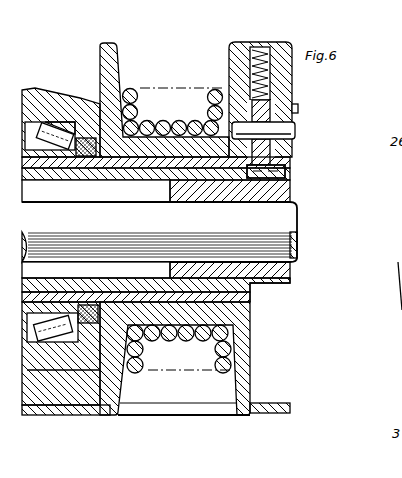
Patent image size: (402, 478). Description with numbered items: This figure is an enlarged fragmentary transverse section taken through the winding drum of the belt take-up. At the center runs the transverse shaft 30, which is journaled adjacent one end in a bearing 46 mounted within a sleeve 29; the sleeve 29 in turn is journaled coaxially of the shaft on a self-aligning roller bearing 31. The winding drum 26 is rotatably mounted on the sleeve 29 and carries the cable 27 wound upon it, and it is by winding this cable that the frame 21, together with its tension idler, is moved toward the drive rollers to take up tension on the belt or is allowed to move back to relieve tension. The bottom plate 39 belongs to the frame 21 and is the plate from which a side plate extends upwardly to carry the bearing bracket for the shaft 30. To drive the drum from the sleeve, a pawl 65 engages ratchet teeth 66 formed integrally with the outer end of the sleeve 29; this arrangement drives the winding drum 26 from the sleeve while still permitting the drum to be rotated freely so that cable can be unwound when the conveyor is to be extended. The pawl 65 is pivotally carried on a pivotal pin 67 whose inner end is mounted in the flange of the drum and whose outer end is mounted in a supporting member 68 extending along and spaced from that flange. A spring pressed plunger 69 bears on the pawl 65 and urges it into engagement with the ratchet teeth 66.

The frame 21 is at (70, 426).
The winding drum 26 is at (118, 26).
The cable 27 is at (130, 94).
The sleeve 29 is at (126, 183).
The transverse shaft 30 is at (283, 218).
The self-aligning roller bearing 31 is at (62, 95).
The bottom plate 39 is at (92, 417).
The bearing 46 is at (296, 186).
The pawl 65 is at (290, 167).
The ratchet teeth 66 is at (285, 300).
The pivotal pin 67 is at (290, 127).
The supporting member 68 is at (290, 146).
The spring pressed plunger 69 is at (270, 68).